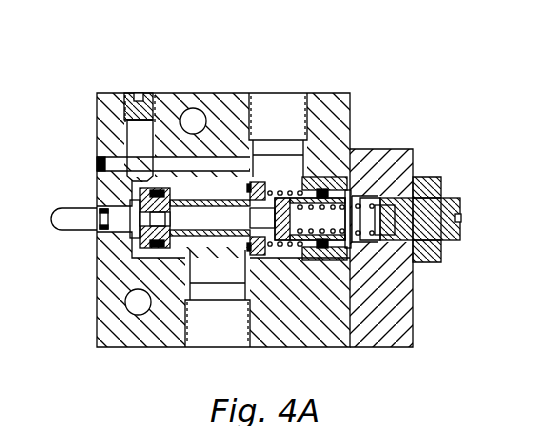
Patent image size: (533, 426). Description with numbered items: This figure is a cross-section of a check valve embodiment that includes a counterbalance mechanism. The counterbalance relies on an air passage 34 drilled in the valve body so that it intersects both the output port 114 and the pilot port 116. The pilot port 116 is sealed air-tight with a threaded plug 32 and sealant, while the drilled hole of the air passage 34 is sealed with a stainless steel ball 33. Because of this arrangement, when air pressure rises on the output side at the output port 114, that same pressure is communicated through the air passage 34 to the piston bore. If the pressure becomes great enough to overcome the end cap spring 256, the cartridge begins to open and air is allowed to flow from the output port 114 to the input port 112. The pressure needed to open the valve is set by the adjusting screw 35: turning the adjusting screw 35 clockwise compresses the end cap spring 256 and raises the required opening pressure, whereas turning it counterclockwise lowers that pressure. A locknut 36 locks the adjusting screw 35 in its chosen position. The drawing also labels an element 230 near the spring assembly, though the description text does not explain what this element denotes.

The plug bolt 32 is at (146, 90).
The seal / inlet passage 33 is at (100, 163).
The valve body 34 is at (232, 140).
The adjusting screw 35 is at (450, 197).
The lock nut 36 is at (441, 250).
The outlet port 112 is at (199, 348).
The inlet port 114 is at (286, 93).
The bore 116 is at (136, 152).
The spring cup 230 is at (258, 250).
The bushing 256 is at (350, 175).